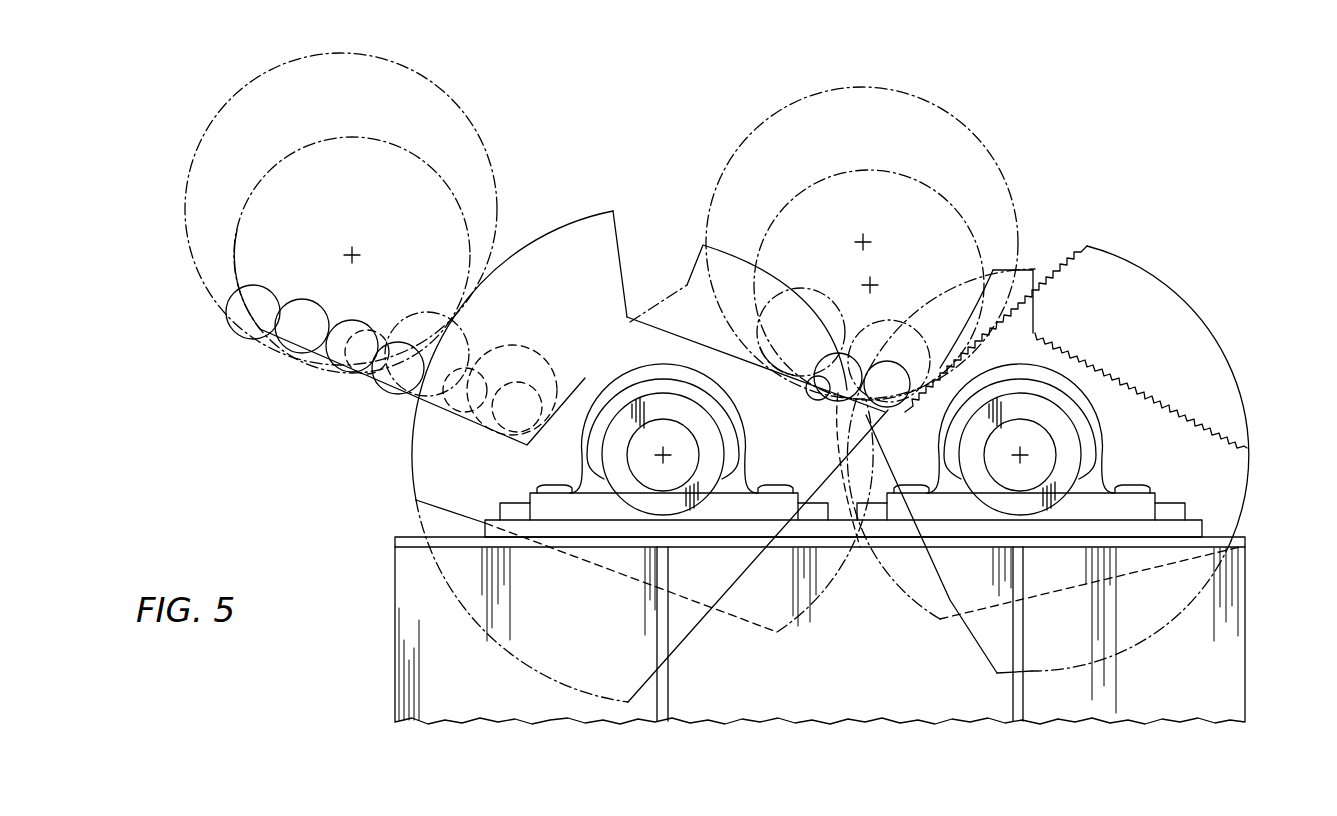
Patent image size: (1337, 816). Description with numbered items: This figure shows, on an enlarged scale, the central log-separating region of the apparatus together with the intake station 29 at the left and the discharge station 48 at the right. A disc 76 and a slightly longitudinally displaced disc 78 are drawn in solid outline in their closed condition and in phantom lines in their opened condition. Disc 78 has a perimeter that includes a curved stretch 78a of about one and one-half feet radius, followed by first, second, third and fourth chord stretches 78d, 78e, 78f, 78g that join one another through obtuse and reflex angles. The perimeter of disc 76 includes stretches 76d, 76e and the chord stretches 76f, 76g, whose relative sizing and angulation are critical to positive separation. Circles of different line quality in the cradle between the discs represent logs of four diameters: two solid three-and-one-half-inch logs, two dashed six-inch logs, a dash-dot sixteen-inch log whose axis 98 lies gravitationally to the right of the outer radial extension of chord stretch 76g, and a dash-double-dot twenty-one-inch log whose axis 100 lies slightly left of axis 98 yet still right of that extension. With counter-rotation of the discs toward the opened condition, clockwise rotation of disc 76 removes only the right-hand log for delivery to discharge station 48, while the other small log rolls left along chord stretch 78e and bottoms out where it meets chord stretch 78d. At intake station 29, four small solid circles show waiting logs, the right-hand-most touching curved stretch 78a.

The intake station 29 is at (528, 145).
The disc 78 is at (563, 260).
The curved stretch 78a is at (624, 181).
The first chord stretch 78d is at (622, 237).
The second chord stretch 78e is at (662, 327).
The third chord stretch 78f is at (826, 383).
The fourth chord stretch 78g is at (822, 408).
The longitudinal axis of twenty-one-inch log 100 is at (868, 236).
The axis of sixteen-inch log 98 is at (874, 283).
The chord stretch 76f is at (958, 324).
The chord stretch 76g is at (887, 397).
The serrated upper edge of segment 76 76d is at (1056, 268).
The serrated lower edge of segment 76 76e is at (1032, 362).
The disc 76 is at (1172, 342).
The discharge station 48 is at (1207, 258).